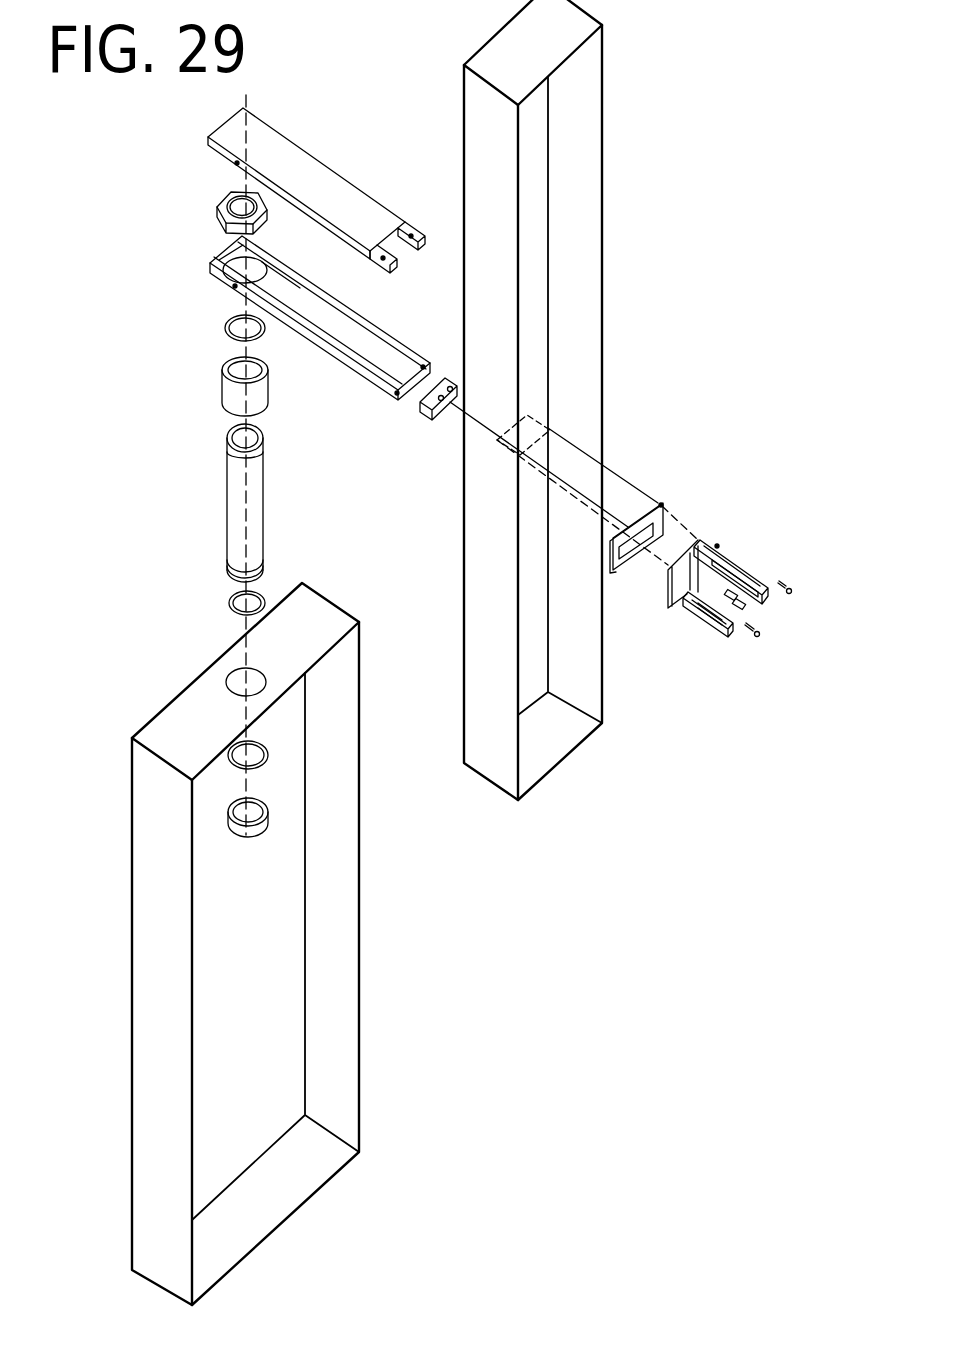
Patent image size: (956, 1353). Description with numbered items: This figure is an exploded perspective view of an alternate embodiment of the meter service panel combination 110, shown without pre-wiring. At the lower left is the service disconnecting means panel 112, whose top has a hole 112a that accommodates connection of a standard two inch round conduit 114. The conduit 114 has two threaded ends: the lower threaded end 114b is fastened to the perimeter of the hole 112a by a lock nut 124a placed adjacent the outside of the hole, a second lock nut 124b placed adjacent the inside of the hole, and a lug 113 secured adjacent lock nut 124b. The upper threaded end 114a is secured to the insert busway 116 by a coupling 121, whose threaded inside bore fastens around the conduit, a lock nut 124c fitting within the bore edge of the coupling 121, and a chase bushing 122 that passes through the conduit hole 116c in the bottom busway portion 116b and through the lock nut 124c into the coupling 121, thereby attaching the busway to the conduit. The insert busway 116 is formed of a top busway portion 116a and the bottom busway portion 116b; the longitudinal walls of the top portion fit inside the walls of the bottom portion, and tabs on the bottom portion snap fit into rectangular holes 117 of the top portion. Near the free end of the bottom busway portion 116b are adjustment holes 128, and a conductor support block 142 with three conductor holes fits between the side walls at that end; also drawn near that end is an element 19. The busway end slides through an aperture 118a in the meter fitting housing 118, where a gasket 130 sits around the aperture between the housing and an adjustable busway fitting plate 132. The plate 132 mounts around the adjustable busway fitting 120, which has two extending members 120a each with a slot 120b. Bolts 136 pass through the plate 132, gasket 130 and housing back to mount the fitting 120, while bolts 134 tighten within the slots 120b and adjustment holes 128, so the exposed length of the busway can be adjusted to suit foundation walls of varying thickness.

The meter service panel combination 110 is at (379, 92).
The service disconnecting means panel 112 is at (124, 805).
The hole 112a is at (232, 684).
The lug 113 is at (267, 813).
The conduit 114 is at (228, 488).
The threaded end 114a is at (262, 443).
The threaded end 114b is at (260, 575).
The insert busway 116 is at (232, 114).
The top busway portion 116a is at (355, 215).
The bottom busway portion 116b is at (362, 347).
The conduit hole 116c is at (282, 280).
The rectangular holes 117 is at (238, 162).
The meter fitting housing 118 is at (583, 107).
The aperture 118a is at (552, 426).
The ring 19 is at (263, 268).
The adjustable busway fitting 120 is at (723, 628).
The extending members 120a is at (765, 590).
The slots 120b is at (727, 563).
The coupling 121 is at (224, 382).
The chase bushing 122 is at (226, 200).
The lock nut 124a is at (230, 602).
The lock nut 124b is at (265, 752).
The lock nut 124c is at (228, 322).
The adjustment holes 128 is at (400, 396).
The gasket 130 is at (662, 505).
The adjustable busway fitting plate 132 is at (716, 545).
The bolts 134 is at (728, 598).
The bolts 136 is at (793, 592).
The conductor support block 142 is at (440, 412).